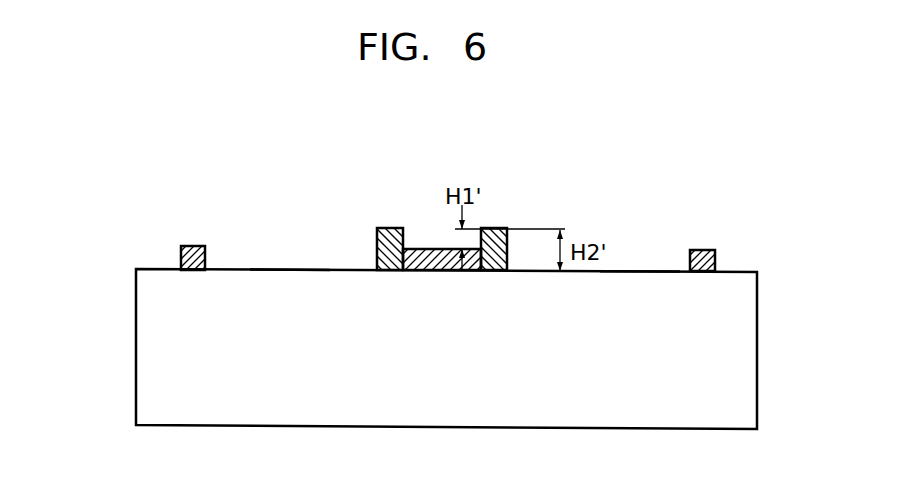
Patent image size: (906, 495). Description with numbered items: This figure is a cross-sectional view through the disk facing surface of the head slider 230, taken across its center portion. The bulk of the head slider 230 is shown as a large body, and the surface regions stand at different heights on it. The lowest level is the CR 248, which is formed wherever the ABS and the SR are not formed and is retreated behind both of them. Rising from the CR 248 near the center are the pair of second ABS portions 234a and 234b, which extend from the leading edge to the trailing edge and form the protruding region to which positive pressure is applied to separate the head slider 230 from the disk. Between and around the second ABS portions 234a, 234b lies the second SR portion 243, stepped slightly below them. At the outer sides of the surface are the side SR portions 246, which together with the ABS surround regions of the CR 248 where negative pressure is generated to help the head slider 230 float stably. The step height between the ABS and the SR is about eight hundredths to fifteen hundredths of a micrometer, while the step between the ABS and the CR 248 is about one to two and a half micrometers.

The head slider 230 is at (138, 198).
The side SR portions 246 is at (194, 246).
The CR 248 is at (292, 270).
The second ABS portion 234a is at (385, 229).
The second ABS portion 234b is at (502, 229).
The second SR portion 243 is at (428, 250).